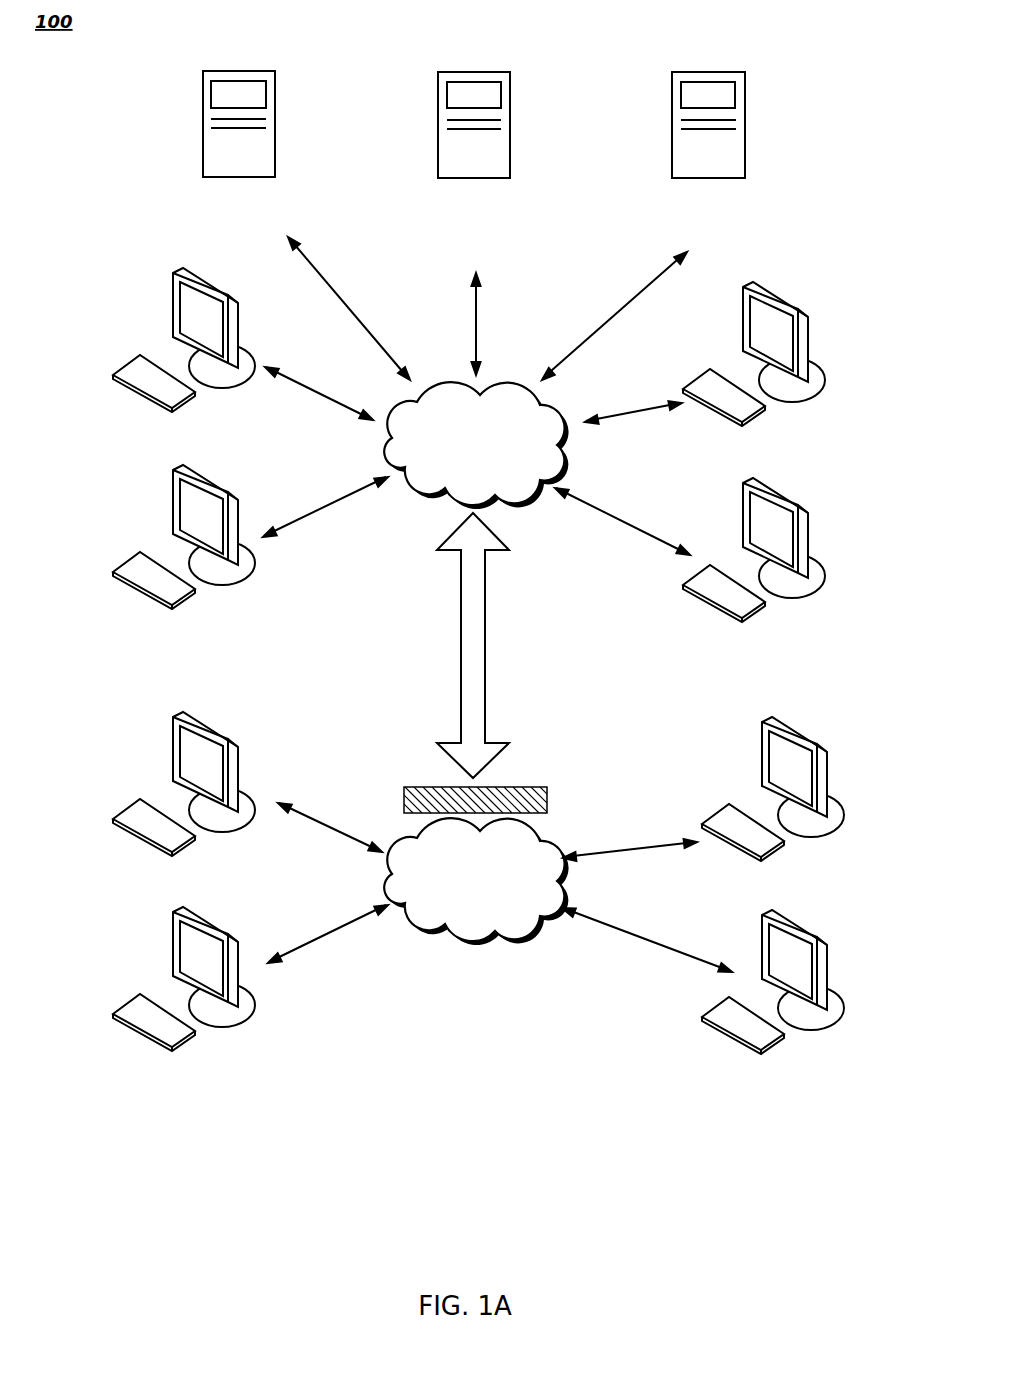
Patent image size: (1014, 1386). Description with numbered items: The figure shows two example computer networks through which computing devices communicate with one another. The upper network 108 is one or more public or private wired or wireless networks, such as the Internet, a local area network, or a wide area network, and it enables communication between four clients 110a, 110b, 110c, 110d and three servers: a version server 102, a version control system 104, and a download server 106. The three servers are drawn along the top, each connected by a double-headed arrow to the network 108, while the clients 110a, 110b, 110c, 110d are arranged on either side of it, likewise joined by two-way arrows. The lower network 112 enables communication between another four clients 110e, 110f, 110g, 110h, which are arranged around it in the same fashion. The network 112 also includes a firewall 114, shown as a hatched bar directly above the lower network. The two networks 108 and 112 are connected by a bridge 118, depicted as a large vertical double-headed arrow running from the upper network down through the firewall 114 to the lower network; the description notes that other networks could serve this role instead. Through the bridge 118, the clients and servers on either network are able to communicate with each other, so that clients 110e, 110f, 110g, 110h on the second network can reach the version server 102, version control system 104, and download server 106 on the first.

The version server 102 is at (275, 71).
The version control system 104 is at (510, 72).
The download server 106 is at (745, 72).
The network 108 is at (476, 445).
The client 110a is at (173, 274).
The client 110b is at (173, 471).
The client 110c is at (808, 318).
The client 110d is at (808, 514).
The client 110e is at (173, 718).
The client 110f is at (173, 913).
The client 110g is at (827, 753).
The client 110h is at (827, 946).
The network 112 is at (476, 881).
The firewall 114 is at (547, 787).
The bridge 118 is at (486, 636).